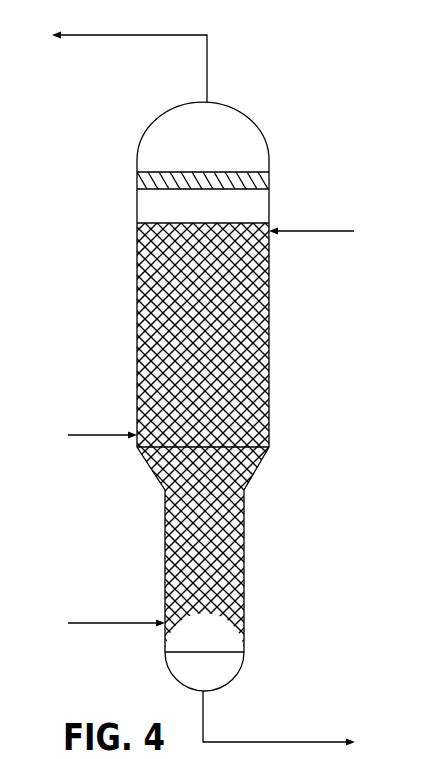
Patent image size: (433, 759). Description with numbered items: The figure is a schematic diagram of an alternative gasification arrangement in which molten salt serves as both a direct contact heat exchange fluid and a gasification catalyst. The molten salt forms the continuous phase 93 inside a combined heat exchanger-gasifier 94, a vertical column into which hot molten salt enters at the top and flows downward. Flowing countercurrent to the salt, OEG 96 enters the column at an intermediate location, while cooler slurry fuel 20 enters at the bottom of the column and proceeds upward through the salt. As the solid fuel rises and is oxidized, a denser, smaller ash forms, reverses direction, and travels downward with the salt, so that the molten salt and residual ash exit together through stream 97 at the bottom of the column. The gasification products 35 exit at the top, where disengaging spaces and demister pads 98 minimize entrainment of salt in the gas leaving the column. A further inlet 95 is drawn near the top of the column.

The slurry fuel 20 is at (113, 623).
The gasification products 35 is at (207, 58).
The continuous phase 93 is at (237, 370).
The combined heat exchanger-gasifier 94 is at (269, 415).
The inlet line 95 is at (288, 231).
The OEG 96 is at (87, 436).
The salt and ash exit stream 97 is at (255, 738).
The demister pads 98 is at (253, 172).